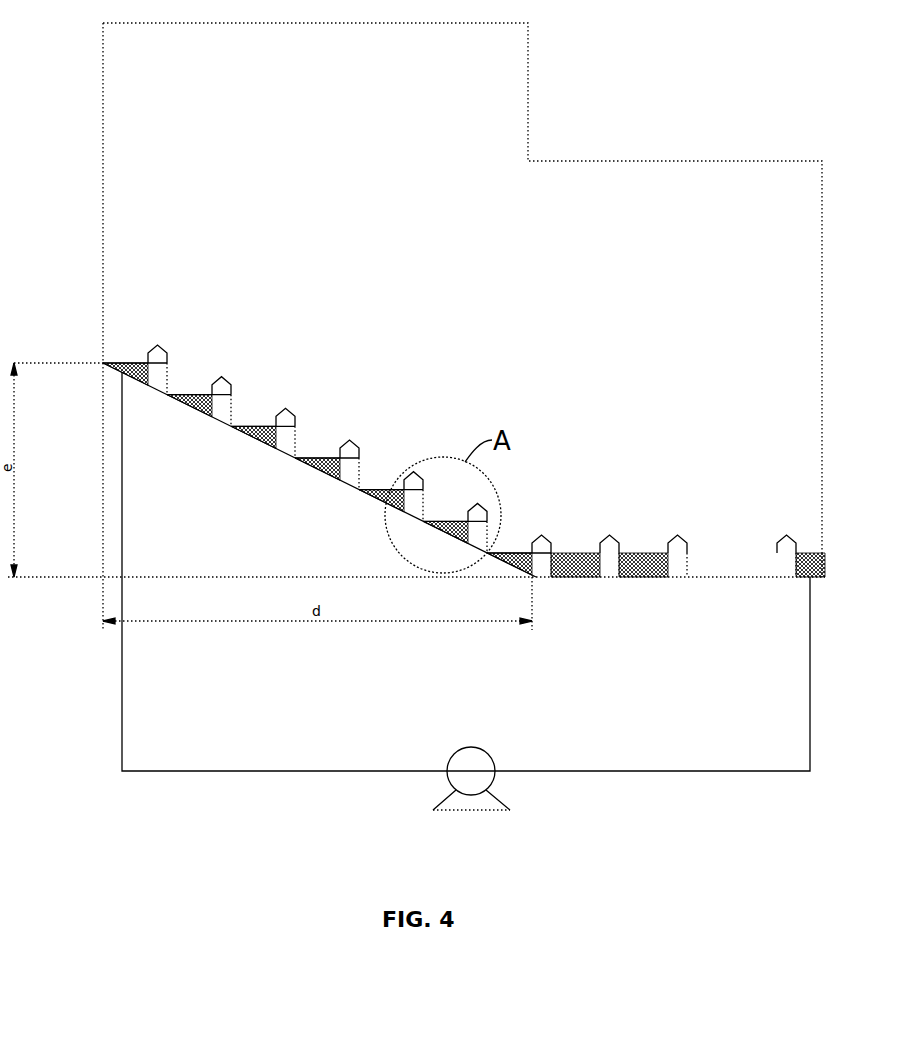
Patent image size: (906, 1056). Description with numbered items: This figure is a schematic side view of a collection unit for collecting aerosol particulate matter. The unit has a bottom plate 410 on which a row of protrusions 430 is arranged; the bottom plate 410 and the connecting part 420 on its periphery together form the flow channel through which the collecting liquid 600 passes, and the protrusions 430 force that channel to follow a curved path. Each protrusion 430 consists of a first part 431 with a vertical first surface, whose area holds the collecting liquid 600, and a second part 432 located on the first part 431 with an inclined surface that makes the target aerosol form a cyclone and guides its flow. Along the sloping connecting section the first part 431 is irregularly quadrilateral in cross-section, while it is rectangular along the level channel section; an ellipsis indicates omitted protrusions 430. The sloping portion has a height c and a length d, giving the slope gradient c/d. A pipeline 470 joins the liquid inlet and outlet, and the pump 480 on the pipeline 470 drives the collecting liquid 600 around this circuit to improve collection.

The bottom plate 410 is at (577, 578).
The connecting part 420 is at (530, 110).
The protrusions 430 is at (464, 438).
The first part 431 is at (158, 376).
The second part 432 is at (167, 362).
The pipeline 470 is at (217, 771).
The pump 480 is at (464, 782).
The collecting liquid 600 is at (243, 432).